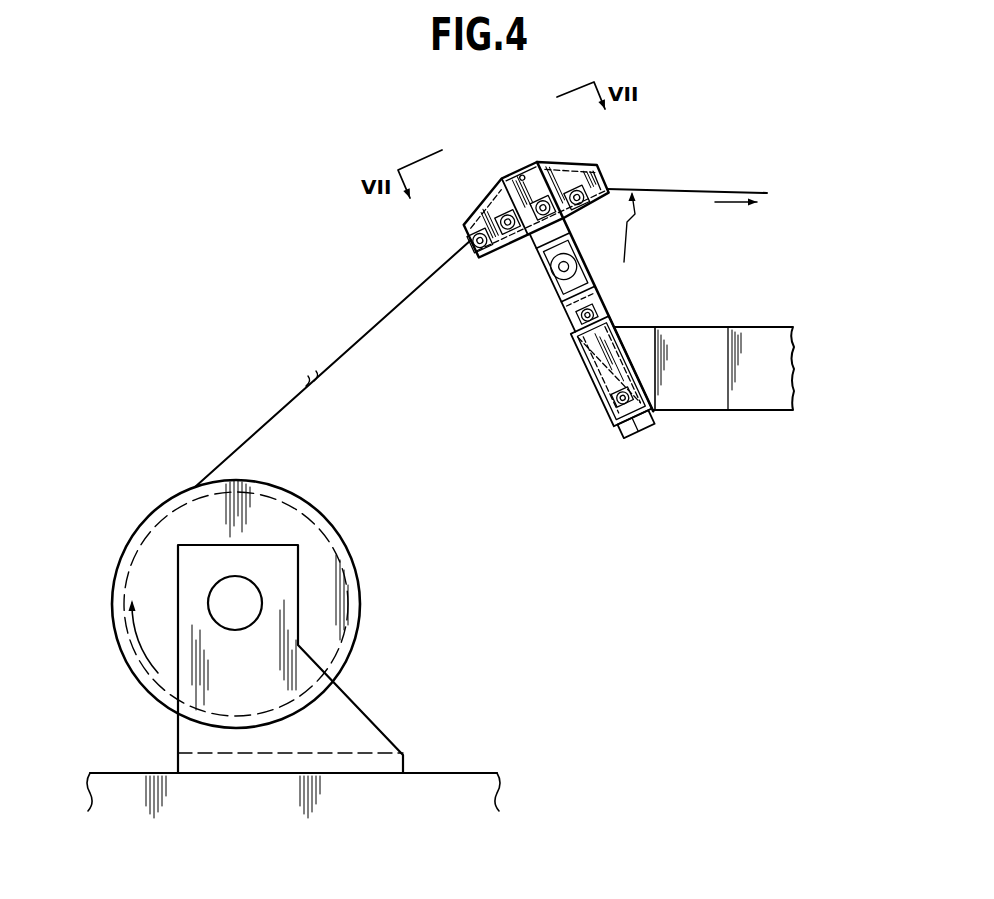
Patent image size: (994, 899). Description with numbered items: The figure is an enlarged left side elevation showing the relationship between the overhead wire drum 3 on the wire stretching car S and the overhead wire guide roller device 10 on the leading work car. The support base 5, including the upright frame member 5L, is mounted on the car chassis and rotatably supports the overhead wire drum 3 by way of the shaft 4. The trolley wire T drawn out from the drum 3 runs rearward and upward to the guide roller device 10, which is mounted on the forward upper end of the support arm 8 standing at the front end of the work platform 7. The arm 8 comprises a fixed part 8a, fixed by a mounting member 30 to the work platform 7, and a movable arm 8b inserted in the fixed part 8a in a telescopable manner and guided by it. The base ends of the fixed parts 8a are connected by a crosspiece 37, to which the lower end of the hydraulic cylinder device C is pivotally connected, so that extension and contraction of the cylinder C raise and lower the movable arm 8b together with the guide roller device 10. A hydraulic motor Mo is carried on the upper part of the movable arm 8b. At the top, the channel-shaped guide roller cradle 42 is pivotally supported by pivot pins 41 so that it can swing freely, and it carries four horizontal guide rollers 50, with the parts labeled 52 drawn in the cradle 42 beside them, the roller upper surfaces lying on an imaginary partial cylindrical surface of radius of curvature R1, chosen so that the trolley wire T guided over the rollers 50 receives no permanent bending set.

The overhead wire drum 3 is at (115, 567).
The shaft 4 is at (253, 600).
The support base 5 is at (348, 702).
The upright frame member 5L is at (213, 678).
The work platform 7 is at (735, 327).
The support arm 8 is at (563, 317).
The fixed part 8a is at (592, 384).
The movable arm 8b is at (578, 289).
The guide roller device 10 is at (605, 171).
The mounting member 30 is at (644, 328).
The crosspiece 37 is at (630, 440).
The pivot pins 41 is at (522, 173).
The guide roller cradle 42 is at (575, 171).
The horizontal guide rollers 50 is at (512, 232).
The spacer plates 52 is at (484, 211).
The trolley wire T is at (358, 340).
The wire stretching car S is at (455, 775).
The hydraulic cylinder device C is at (590, 355).
The hydraulic motor Mo is at (555, 266).
The radius of curvature R1 is at (642, 229).